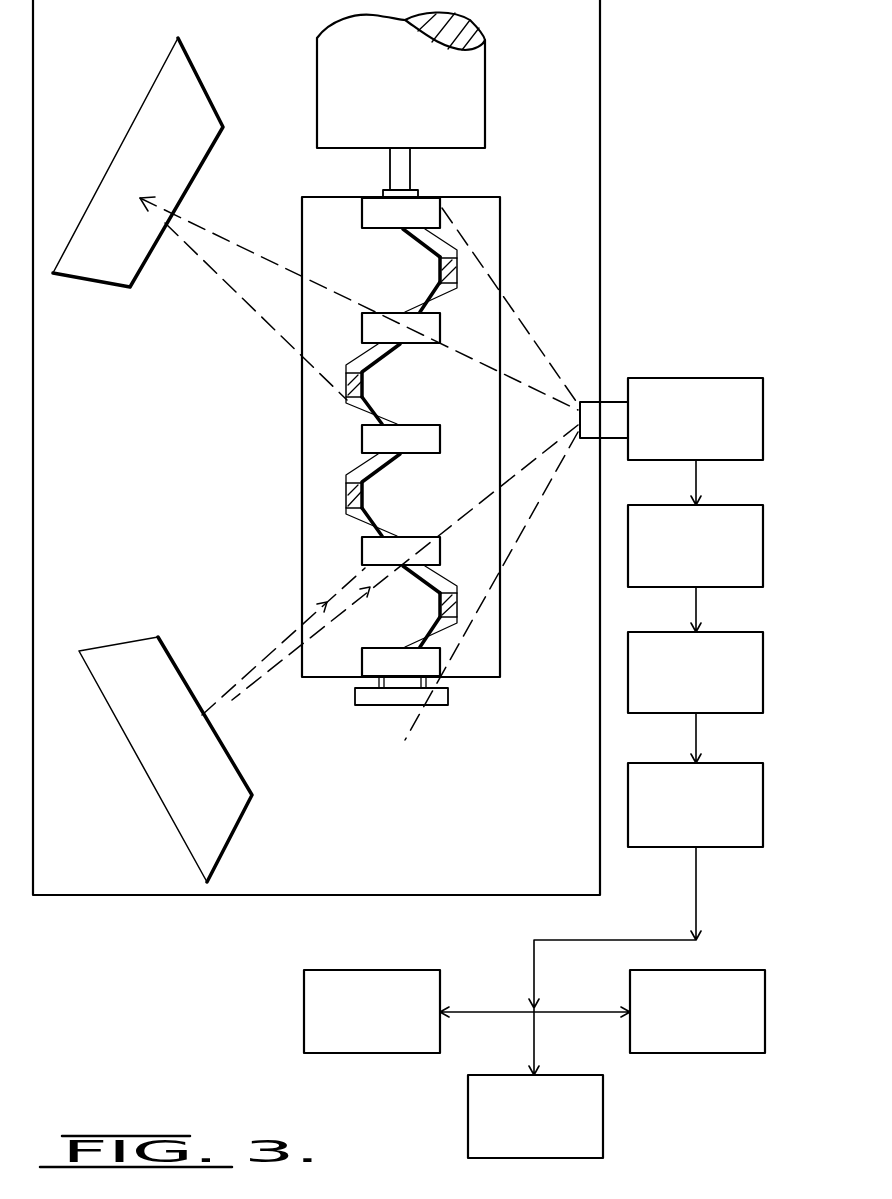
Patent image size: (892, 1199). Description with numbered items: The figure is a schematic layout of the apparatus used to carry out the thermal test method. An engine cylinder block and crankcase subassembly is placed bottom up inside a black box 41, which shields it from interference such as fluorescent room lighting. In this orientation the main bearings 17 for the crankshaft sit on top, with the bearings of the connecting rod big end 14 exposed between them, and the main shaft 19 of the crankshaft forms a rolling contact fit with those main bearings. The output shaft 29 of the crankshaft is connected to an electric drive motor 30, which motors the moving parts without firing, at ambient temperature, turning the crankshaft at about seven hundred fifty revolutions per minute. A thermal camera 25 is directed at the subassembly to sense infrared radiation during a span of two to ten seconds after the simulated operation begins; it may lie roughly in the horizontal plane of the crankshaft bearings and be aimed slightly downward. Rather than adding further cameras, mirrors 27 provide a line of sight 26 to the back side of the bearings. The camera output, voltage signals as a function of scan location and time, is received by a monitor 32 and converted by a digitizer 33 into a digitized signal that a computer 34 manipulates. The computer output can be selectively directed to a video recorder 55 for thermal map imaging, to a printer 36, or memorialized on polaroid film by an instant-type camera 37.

The connecting rod big end 14 is at (456, 270).
The main bearings 17 is at (372, 220).
The main shaft of the crankshaft 19 is at (392, 690).
The thermal camera 25 is at (697, 378).
The line of sight 26 is at (244, 250).
The mirrors 27 is at (150, 123).
The output shaft 29 is at (390, 192).
The electric drive motor 30 is at (475, 93).
The monitor 32 is at (733, 513).
The digitizer 33 is at (732, 640).
The computer 34 is at (732, 770).
The printer 36 is at (730, 982).
The instant-type camera 37 is at (305, 1012).
The black box 41 is at (600, 168).
The video recorder 55 is at (594, 1103).